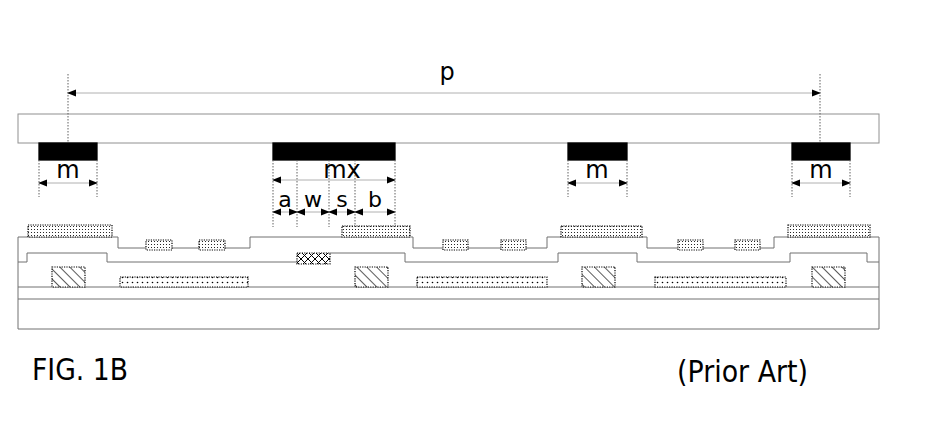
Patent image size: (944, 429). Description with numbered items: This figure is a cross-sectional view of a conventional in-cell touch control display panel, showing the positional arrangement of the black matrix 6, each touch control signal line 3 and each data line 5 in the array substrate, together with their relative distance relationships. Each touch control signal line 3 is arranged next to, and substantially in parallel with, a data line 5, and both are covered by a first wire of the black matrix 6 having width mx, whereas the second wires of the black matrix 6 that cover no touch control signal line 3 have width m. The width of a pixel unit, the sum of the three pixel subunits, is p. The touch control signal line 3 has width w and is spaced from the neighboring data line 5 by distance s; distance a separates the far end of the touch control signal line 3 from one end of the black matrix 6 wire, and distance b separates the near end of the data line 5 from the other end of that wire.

The touch control signal line 3 is at (310, 264).
The data line 5 is at (380, 278).
The black matrix 6 is at (395, 148).